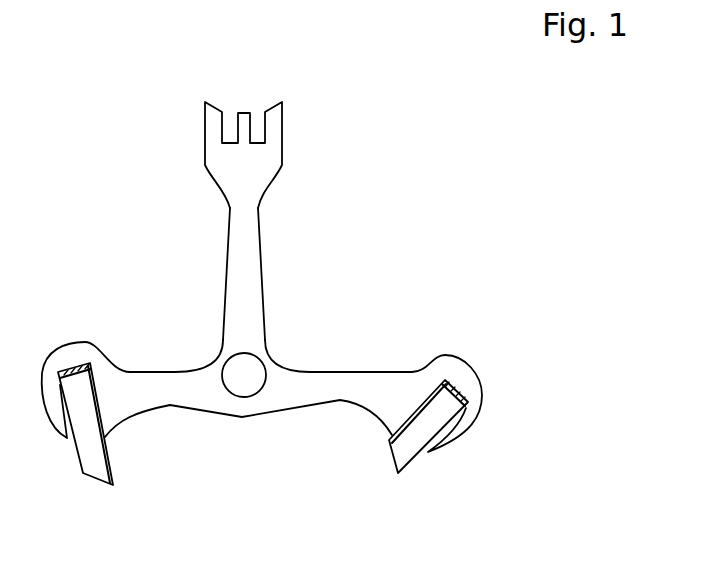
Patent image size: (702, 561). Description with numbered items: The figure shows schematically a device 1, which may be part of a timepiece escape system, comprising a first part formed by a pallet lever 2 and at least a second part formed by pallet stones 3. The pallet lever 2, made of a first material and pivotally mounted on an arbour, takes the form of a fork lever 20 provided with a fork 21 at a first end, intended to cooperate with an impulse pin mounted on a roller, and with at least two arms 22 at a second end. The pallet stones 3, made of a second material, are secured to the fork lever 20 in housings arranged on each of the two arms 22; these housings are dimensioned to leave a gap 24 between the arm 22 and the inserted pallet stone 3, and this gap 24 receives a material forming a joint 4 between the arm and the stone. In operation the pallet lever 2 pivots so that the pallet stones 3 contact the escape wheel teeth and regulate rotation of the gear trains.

The device 1 is at (375, 127).
The pallet lever 2 is at (272, 262).
The fork lever 20 is at (240, 261).
The fork 21 is at (213, 132).
The arms 22 is at (167, 385).
The joint 4 is at (73, 372).
The gap 24 is at (460, 393).
The pallet stones 3 is at (95, 463).